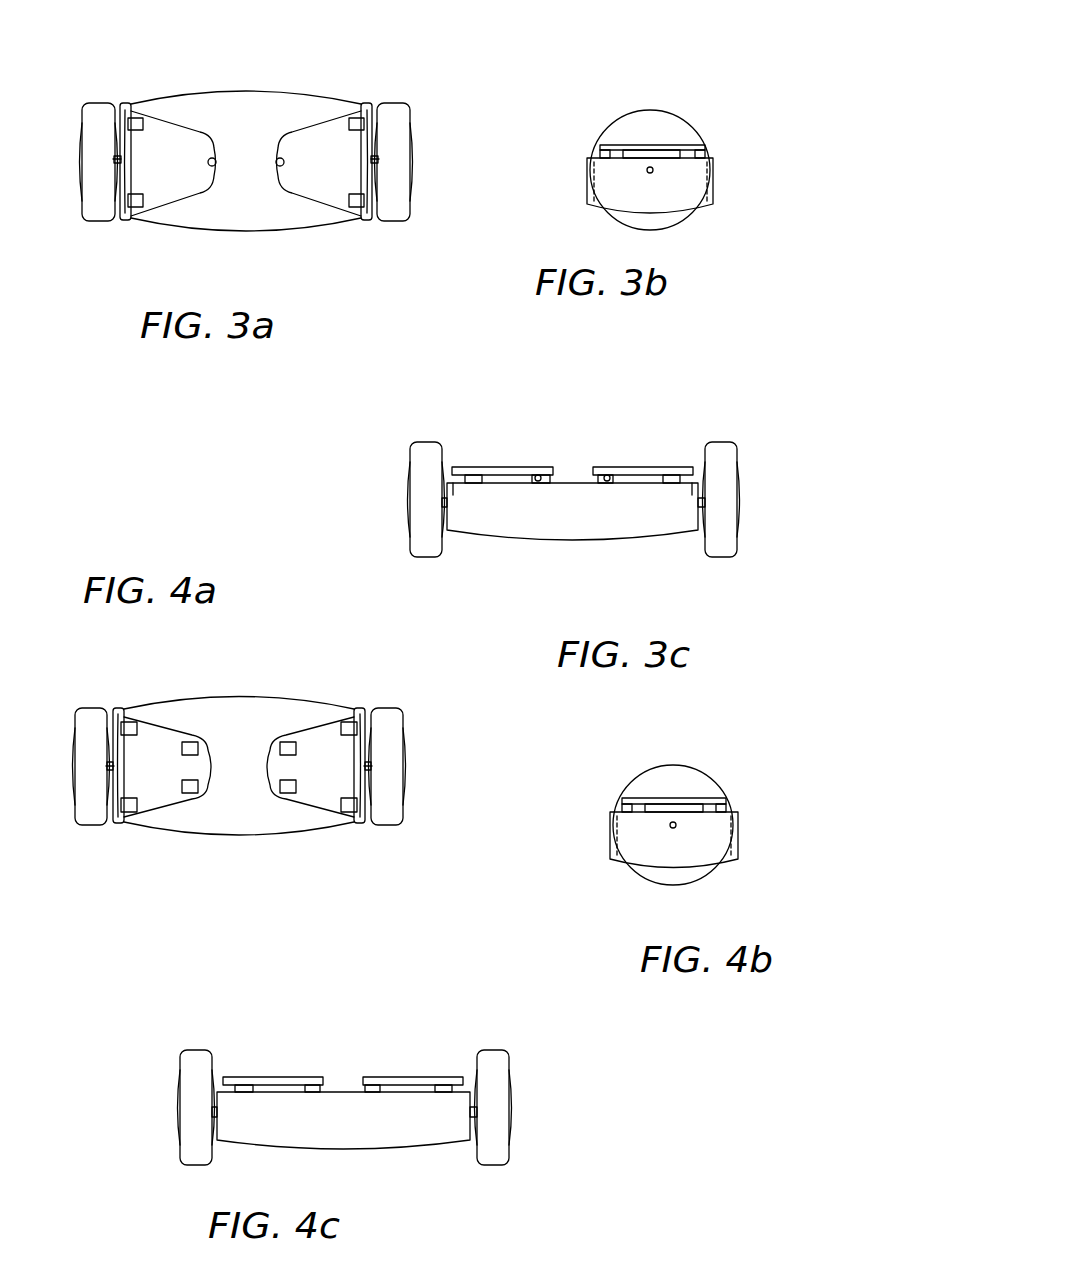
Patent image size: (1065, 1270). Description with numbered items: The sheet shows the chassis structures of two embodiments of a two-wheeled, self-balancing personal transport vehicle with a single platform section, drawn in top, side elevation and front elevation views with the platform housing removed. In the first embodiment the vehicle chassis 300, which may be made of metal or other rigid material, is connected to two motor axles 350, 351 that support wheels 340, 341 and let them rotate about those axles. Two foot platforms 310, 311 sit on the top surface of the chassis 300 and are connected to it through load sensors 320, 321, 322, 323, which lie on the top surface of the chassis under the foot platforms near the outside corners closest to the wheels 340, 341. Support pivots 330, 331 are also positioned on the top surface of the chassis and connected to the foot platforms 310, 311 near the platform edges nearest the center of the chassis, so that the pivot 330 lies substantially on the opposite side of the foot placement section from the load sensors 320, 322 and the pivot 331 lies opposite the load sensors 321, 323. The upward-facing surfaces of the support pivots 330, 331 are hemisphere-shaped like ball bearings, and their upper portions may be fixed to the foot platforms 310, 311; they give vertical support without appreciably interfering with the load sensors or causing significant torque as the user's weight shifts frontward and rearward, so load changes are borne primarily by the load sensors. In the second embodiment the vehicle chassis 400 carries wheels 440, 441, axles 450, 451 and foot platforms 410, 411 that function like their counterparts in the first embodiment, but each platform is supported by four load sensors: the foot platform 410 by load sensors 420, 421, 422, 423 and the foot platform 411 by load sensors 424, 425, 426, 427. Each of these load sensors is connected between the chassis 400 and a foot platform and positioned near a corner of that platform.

In FIG. 3a, the vehicle chassis 300 is at (305, 93).
In FIG. 3b, the vehicle chassis 300 is at (715, 193).
In FIG. 3c, the vehicle chassis 300 is at (607, 527).
In FIG. 3a, the foot platform 310 is at (177, 200).
In FIG. 3b, the foot platform 310 is at (660, 147).
In FIG. 3c, the foot platform 310 is at (498, 468).
In FIG. 3a, the foot platform 311 is at (305, 200).
In FIG. 3c, the foot platform 311 is at (640, 468).
In FIG. 3a, the load sensor 320 is at (135, 202).
In FIG. 3b, the load sensor 320 is at (650, 138).
In FIG. 3c, the load sensor 320 is at (456, 542).
In FIG. 3a, the load sensor 321 is at (358, 203).
In FIG. 3b, the load sensor 321 is at (650, 138).
In FIG. 3c, the load sensor 321 is at (691, 542).
In FIG. 3a, the load sensor 322 is at (135, 122).
In FIG. 3b, the load sensor 322 is at (650, 138).
In FIG. 3c, the load sensor 322 is at (475, 485).
In FIG. 3a, the load sensor 323 is at (358, 122).
In FIG. 3b, the load sensor 323 is at (615, 153).
In FIG. 3c, the load sensor 323 is at (670, 485).
In FIG. 3a, the support pivot 330 is at (209, 159).
In FIG. 3c, the support pivot 330 is at (536, 475).
In FIG. 4c, the support pivot 330 is at (323, 1031).
In FIG. 3a, the support pivot 331 is at (277, 159).
In FIG. 3c, the support pivot 331 is at (608, 475).
In FIG. 4c, the support pivot 331 is at (377, 1087).
In FIG. 3a, the wheel 340 is at (100, 103).
In FIG. 3b, the wheel 340 is at (680, 223).
In FIG. 3c, the wheel 340 is at (425, 442).
In FIG. 3a, the wheel 341 is at (393, 103).
In FIG. 3c, the wheel 341 is at (722, 442).
In FIG. 3a, the axle 350 is at (117, 163).
In FIG. 3b, the axle 350 is at (648, 173).
In FIG. 3c, the axle 350 is at (442, 500).
In FIG. 3a, the axle 351 is at (378, 163).
In FIG. 3c, the axle 351 is at (698, 500).
In FIG. 4a, the vehicle chassis 400 is at (245, 697).
In FIG. 4b, the vehicle chassis 400 is at (610, 848).
In FIG. 4c, the vehicle chassis 400 is at (390, 1137).
In FIG. 4a, the foot platform 410 is at (239, 801).
In FIG. 4b, the foot platform 410 is at (686, 774).
In FIG. 4c, the foot platform 410 is at (260, 1077).
In FIG. 4a, the foot platform 411 is at (267, 780).
In FIG. 4b, the foot platform 411 is at (700, 797).
In FIG. 4c, the foot platform 411 is at (408, 1077).
In FIG. 4a, the load sensor 420 is at (155, 840).
In FIG. 4b, the load sensor 420 is at (622, 784).
In FIG. 4a, the load sensor 421 is at (190, 788).
In FIG. 4b, the load sensor 421 is at (622, 784).
In FIG. 4a, the load sensor 422 is at (158, 696).
In FIG. 4b, the load sensor 422 is at (622, 784).
In FIG. 4a, the load sensor 423 is at (188, 742).
In FIG. 4b, the load sensor 423 is at (622, 784).
In FIG. 4a, the load sensor 424 is at (323, 833).
In FIG. 4b, the load sensor 424 is at (622, 784).
In FIG. 4a, the load sensor 425 is at (350, 807).
In FIG. 4b, the load sensor 425 is at (622, 784).
In FIG. 4a, the load sensor 426 is at (324, 699).
In FIG. 4b, the load sensor 426 is at (622, 784).
In FIG. 4a, the load sensor 427 is at (287, 742).
In FIG. 4b, the load sensor 427 is at (637, 808).
In FIG. 4a, the wheel 440 is at (92, 708).
In FIG. 4b, the wheel 440 is at (712, 838).
In FIG. 4c, the wheel 440 is at (195, 1050).
In FIG. 4a, the wheel 441 is at (387, 708).
In FIG. 4b, the wheel 441 is at (703, 877).
In FIG. 4c, the wheel 441 is at (492, 1050).
In FIG. 4a, the axle 450 is at (108, 768).
In FIG. 4b, the axle 450 is at (606, 859).
In FIG. 4c, the axle 450 is at (212, 1108).
In FIG. 4a, the axle 451 is at (368, 768).
In FIG. 4b, the axle 451 is at (672, 828).
In FIG. 4c, the axle 451 is at (470, 1108).